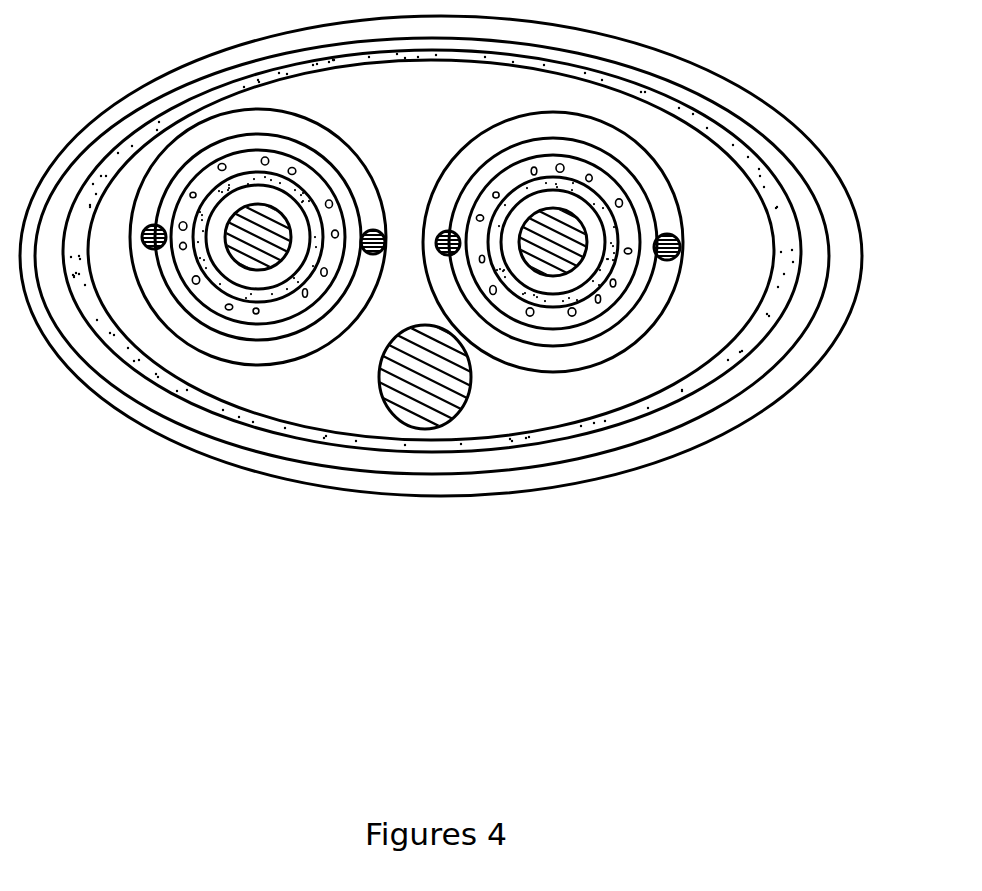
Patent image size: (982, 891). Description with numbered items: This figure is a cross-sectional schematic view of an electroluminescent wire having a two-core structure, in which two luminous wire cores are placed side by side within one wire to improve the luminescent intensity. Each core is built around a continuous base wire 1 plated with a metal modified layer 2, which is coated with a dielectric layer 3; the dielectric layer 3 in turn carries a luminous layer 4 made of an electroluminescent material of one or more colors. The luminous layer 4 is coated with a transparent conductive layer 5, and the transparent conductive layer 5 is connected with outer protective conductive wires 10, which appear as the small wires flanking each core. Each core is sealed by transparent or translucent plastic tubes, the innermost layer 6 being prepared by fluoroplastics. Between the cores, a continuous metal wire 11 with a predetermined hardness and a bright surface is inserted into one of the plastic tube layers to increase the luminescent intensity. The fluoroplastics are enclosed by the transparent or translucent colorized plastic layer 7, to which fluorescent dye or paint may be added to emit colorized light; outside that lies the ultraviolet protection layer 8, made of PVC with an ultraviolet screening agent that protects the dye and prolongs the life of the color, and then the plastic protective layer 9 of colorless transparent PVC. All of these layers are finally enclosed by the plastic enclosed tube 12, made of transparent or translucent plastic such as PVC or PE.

The base wire 1 is at (258, 237).
The metal modified layer 2 is at (556, 244).
The dielectric layer 3 is at (314, 230).
The luminous layer 4 is at (477, 240).
The transparent conductive layer 5 is at (354, 230).
The innermost plastic tube layer 6 is at (160, 282).
The colorized plastic layer 7 is at (731, 270).
The ultraviolet protection layer 8 is at (74, 245).
The plastic protective layer 9 is at (813, 245).
The outer protective conductive wire 10 is at (667, 260).
The metal wire 11 is at (423, 377).
The plastic enclosed tube 12 is at (27, 255).